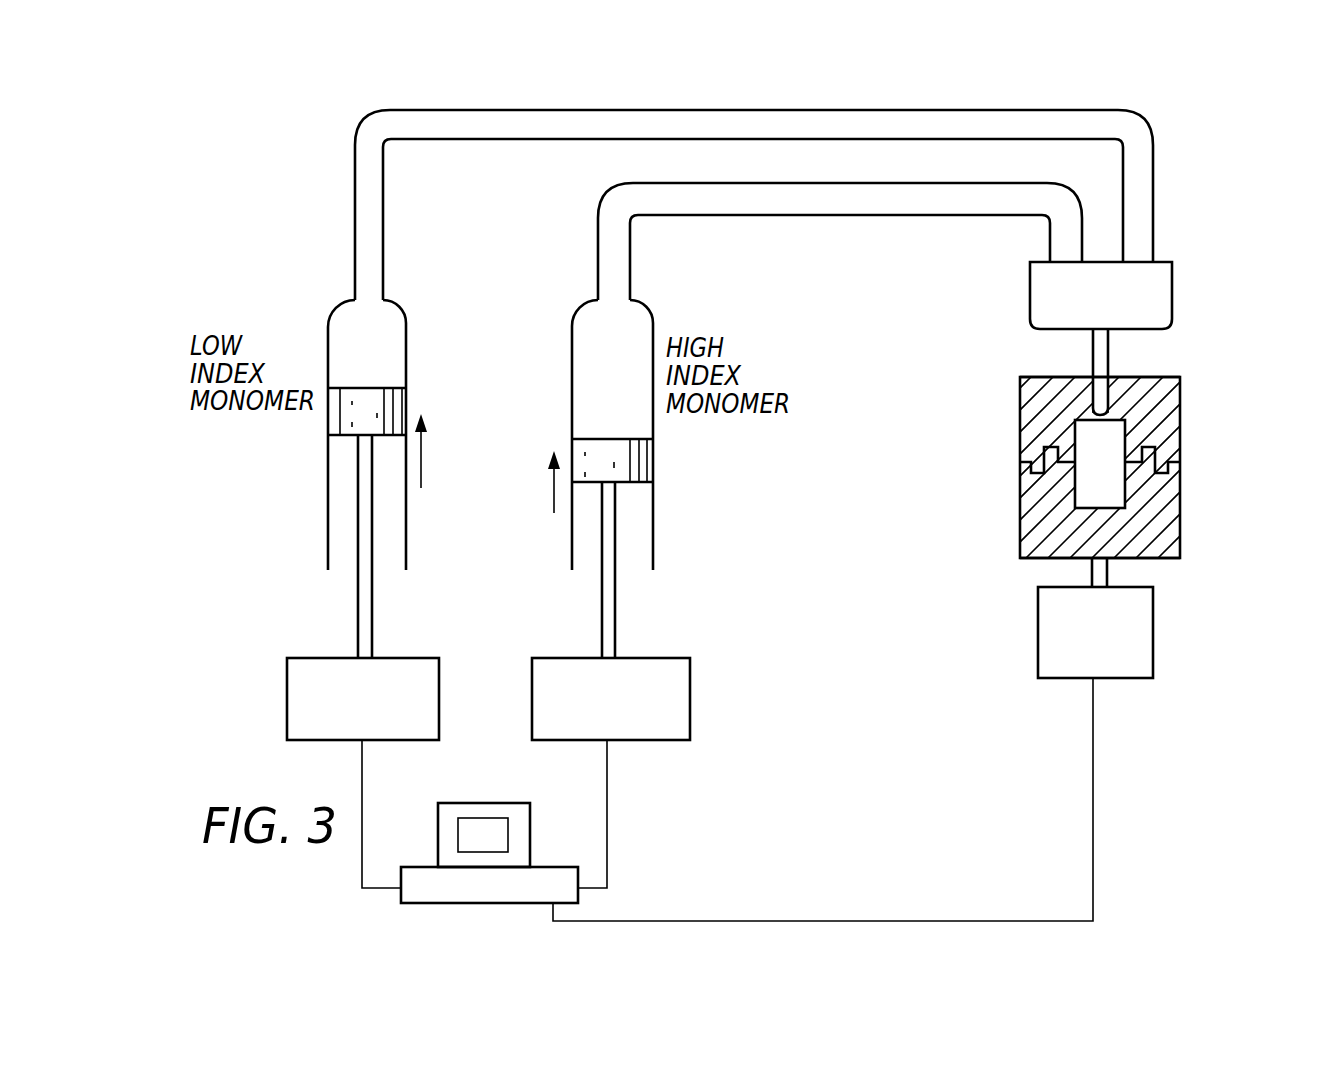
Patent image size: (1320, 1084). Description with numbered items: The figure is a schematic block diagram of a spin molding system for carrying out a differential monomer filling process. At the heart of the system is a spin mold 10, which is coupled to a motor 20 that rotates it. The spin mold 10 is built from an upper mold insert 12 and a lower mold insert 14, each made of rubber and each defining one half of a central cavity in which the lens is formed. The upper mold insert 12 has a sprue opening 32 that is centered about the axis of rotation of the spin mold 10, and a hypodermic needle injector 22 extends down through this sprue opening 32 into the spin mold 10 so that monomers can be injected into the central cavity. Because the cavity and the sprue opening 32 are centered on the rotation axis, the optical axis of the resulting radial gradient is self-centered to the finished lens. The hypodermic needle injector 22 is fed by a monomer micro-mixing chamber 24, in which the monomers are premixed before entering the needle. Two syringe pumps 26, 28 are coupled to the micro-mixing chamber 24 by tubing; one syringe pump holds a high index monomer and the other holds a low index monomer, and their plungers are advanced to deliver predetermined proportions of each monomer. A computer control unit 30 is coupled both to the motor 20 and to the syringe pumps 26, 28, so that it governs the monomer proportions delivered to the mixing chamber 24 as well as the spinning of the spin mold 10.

The spin mold 10 is at (1085, 447).
The upper mold insert 12 is at (1020, 415).
The lower mold insert 14 is at (1020, 520).
The motor 20 is at (1153, 628).
The hypodermic needle injector 22 is at (1110, 350).
The monomer micro-mixing chamber 24 is at (1172, 290).
The syringe pump 26 is at (439, 691).
The syringe pump 28 is at (690, 700).
The computer control unit 30 is at (578, 897).
The sprue opening 32 is at (1090, 372).